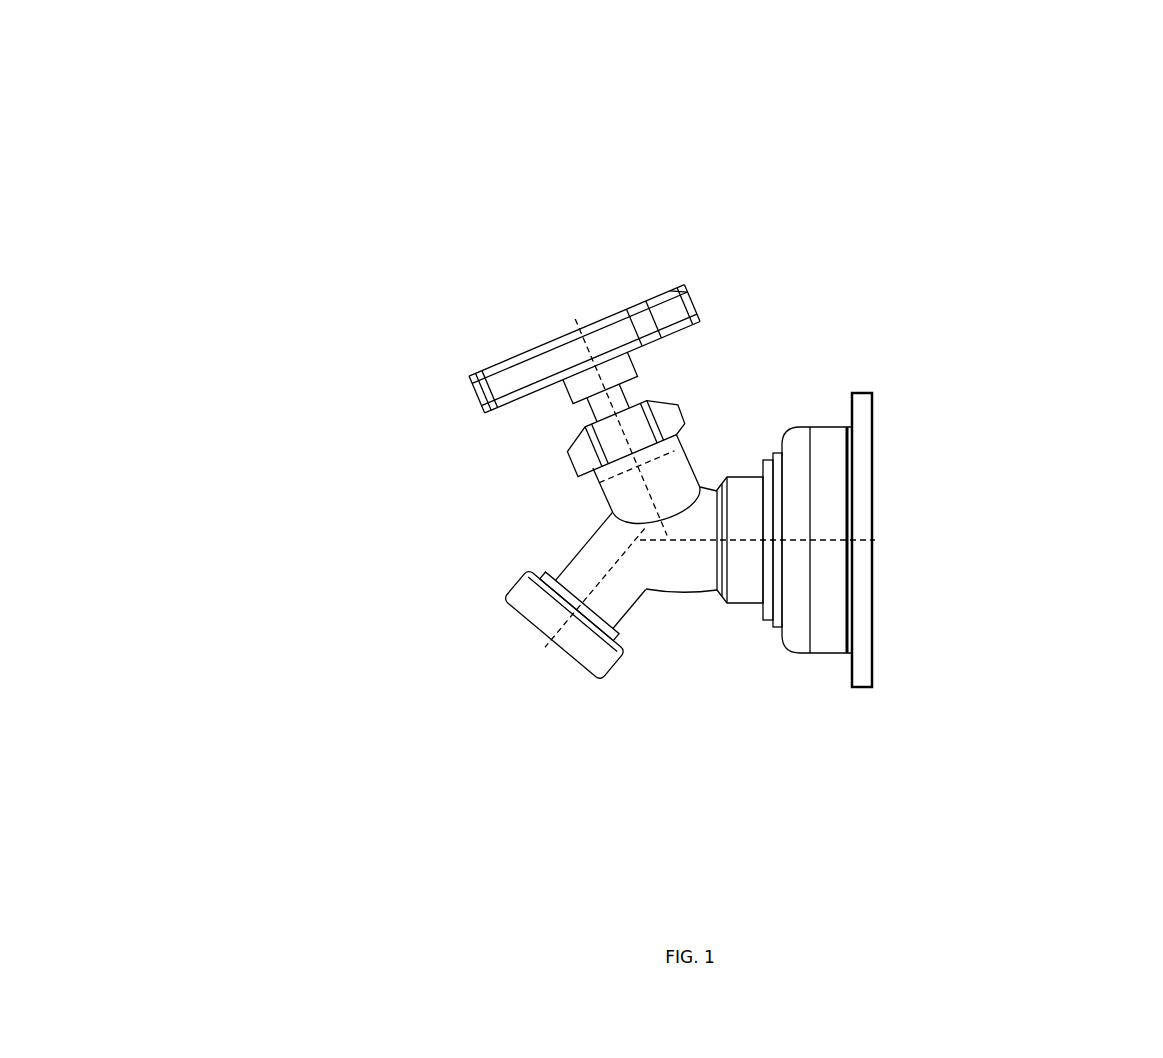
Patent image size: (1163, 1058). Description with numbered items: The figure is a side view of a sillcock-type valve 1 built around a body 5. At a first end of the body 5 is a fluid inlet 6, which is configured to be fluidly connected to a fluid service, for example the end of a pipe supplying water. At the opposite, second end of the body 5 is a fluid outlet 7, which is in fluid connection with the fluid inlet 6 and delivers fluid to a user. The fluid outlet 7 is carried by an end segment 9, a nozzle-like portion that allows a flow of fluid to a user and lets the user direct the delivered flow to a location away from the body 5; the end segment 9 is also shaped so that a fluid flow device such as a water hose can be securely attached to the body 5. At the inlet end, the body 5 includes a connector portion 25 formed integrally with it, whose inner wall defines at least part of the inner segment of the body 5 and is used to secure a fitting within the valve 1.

The valve 1 is at (340, 178).
The body 5 is at (682, 468).
The fluid inlet 6 is at (882, 485).
The fluid outlet 7 is at (545, 672).
The end segment 9 is at (530, 585).
The connector portion 25 is at (808, 653).